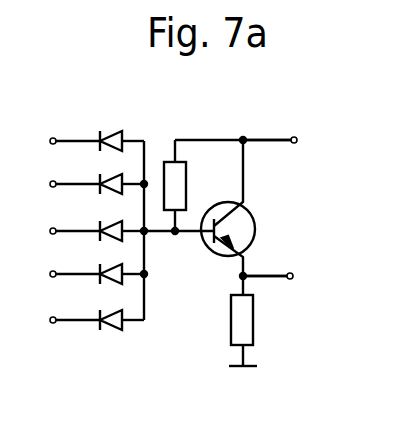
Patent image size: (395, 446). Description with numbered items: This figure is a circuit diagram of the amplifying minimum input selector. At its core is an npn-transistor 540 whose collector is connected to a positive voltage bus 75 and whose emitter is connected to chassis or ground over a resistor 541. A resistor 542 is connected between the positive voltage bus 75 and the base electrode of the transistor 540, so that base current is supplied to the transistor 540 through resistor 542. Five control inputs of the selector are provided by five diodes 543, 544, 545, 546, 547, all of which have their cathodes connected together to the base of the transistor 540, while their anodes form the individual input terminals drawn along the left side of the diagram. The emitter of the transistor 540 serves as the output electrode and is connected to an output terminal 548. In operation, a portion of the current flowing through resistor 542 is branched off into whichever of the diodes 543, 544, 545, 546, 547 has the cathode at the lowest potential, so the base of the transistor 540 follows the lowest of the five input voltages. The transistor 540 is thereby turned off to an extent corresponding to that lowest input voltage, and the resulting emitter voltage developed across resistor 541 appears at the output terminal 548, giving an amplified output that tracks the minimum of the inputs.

The diode 543 is at (117, 133).
The diode 544 is at (112, 176).
The diode 545 is at (112, 226).
The diode 546 is at (112, 270).
The diode 547 is at (112, 316).
The resistor 542 is at (186, 175).
The npn-transistor 540 is at (258, 222).
The positive voltage bus 75 is at (258, 140).
The output terminal 548 is at (288, 279).
The resistor 541 is at (253, 326).